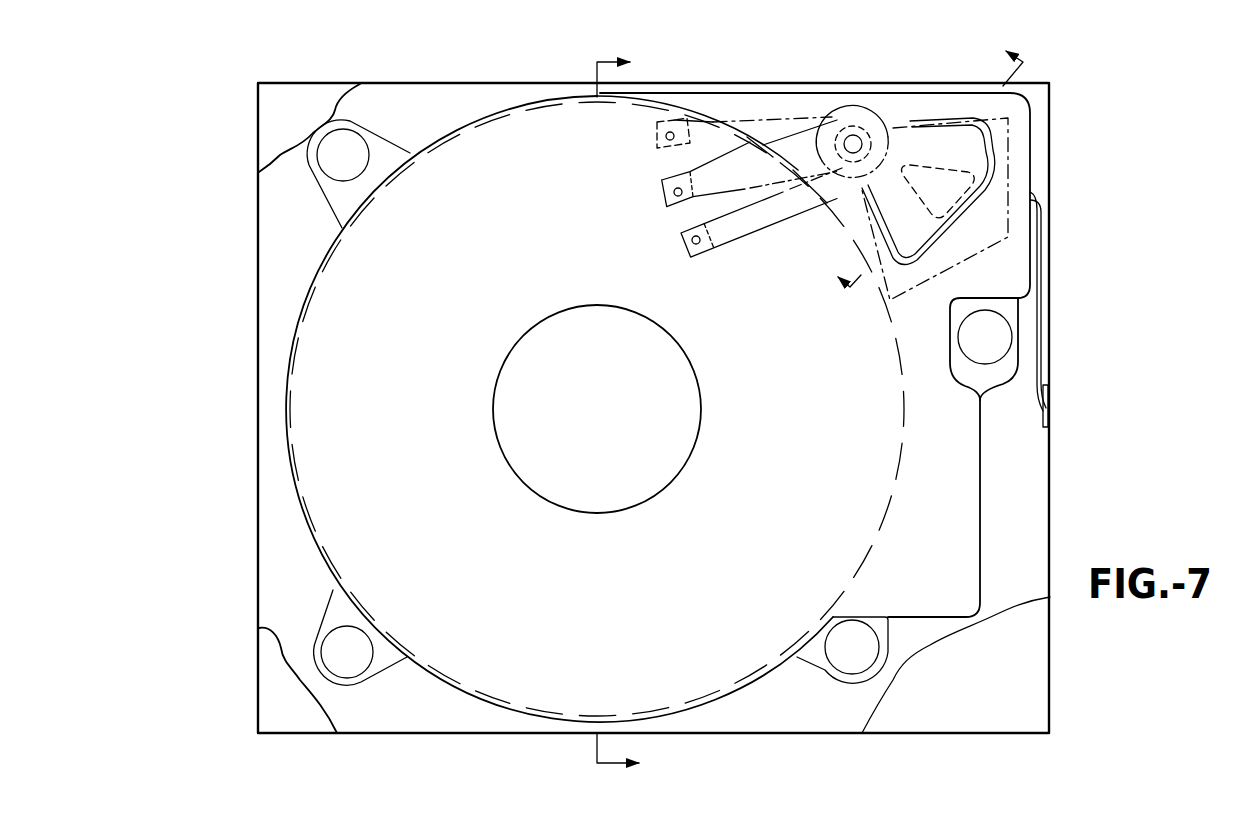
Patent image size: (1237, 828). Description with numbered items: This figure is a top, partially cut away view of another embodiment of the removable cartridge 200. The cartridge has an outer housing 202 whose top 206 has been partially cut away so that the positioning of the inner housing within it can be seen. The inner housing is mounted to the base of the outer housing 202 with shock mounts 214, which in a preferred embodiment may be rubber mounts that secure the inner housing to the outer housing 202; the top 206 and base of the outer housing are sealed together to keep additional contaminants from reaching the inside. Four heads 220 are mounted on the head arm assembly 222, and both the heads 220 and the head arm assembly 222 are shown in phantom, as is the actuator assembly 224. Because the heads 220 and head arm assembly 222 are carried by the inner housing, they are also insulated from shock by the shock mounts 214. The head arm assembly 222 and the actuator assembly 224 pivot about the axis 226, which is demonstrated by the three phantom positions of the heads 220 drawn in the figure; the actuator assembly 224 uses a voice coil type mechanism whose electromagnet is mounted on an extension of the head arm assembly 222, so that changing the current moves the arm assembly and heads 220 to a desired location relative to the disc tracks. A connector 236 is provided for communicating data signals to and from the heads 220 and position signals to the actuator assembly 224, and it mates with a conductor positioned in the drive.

The removable cartridge 200 is at (251, 690).
The outer housing 202 is at (288, 744).
The top of the outer housing 206 is at (258, 137).
The shock mounts 214 is at (347, 153).
The heads 220 is at (628, 180).
The head arm assembly 222 is at (769, 76).
The actuator assembly 224 is at (800, 283).
The axis 226 is at (855, 147).
The connector 236 is at (1049, 406).